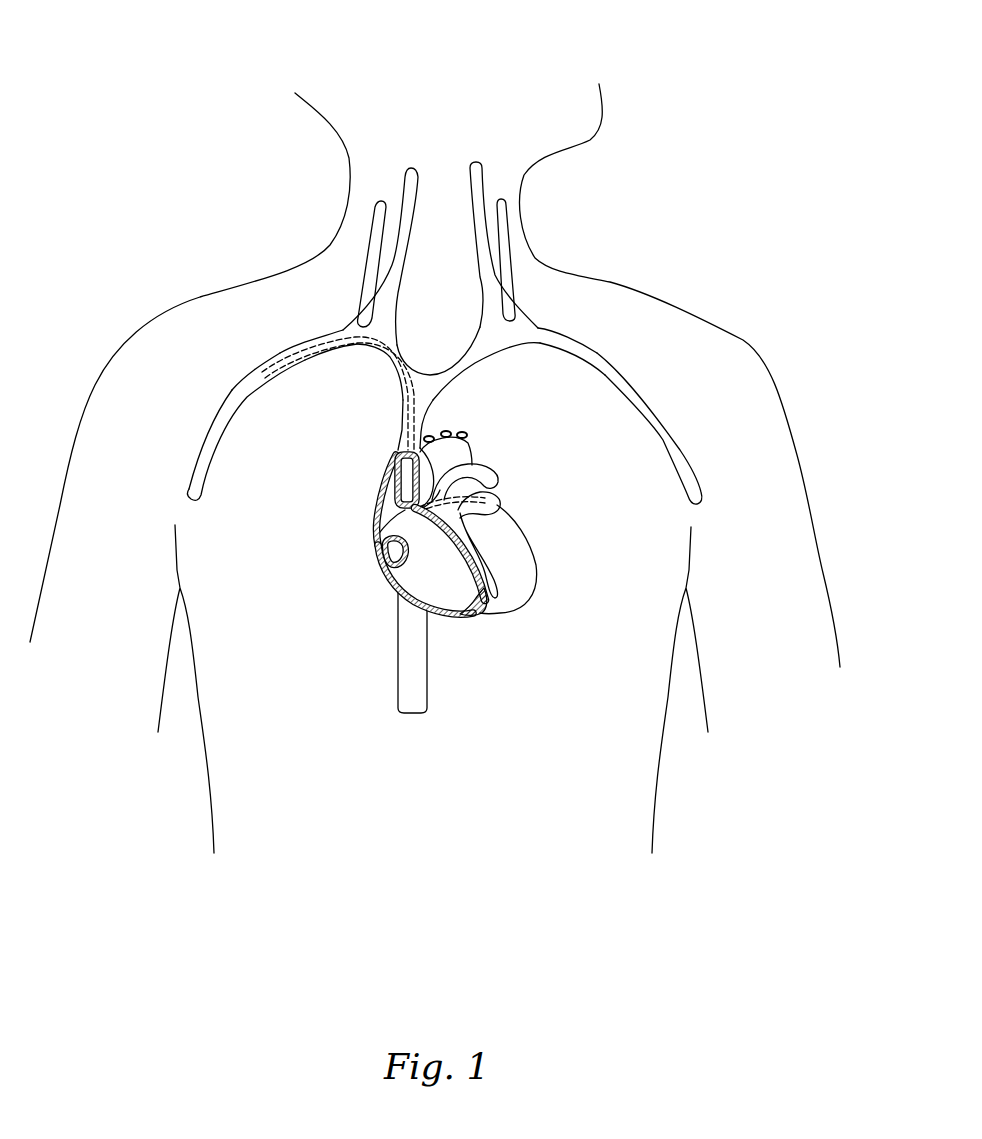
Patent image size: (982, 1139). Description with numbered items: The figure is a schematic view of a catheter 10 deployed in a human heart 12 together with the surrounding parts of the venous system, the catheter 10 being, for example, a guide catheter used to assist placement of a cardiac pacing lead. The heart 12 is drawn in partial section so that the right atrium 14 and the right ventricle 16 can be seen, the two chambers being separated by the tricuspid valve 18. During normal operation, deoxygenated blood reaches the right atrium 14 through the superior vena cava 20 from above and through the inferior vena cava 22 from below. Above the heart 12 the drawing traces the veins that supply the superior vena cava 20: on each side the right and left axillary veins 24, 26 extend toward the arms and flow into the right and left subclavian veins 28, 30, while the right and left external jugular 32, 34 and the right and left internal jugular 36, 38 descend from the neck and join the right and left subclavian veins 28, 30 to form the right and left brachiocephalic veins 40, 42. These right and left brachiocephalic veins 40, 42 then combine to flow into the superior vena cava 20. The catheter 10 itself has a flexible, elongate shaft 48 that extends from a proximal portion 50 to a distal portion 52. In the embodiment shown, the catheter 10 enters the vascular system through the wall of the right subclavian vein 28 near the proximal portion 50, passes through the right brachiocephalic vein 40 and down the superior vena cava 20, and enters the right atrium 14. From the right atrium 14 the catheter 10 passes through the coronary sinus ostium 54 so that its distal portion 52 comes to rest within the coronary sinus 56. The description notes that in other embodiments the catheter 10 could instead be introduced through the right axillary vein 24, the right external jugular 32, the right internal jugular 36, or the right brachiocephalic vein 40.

The catheter 10 is at (168, 58).
The heart 12 is at (538, 628).
The right atrium 14 is at (386, 506).
The right ventricle 16 is at (448, 603).
The tricuspid valve 18 is at (386, 568).
The superior vena cava 20 is at (399, 440).
The inferior vena cava 22 is at (399, 662).
The right axillary vein 24 is at (186, 490).
The left axillary vein 26 is at (703, 497).
The right subclavian vein 28 is at (285, 366).
The left subclavian vein 30 is at (538, 327).
The right external jugular 32 is at (368, 249).
The left external jugular 34 is at (515, 263).
The right internal jugular 36 is at (409, 232).
The left internal jugular 38 is at (482, 274).
The right brachiocephalic vein 40 is at (383, 351).
The left brachiocephalic vein 42 is at (463, 362).
The shaft 48 is at (329, 352).
The proximal portion 50 is at (263, 370).
The distal portion 52 is at (485, 501).
The coronary sinus ostium 54 is at (383, 540).
The coronary sinus 56 is at (450, 474).